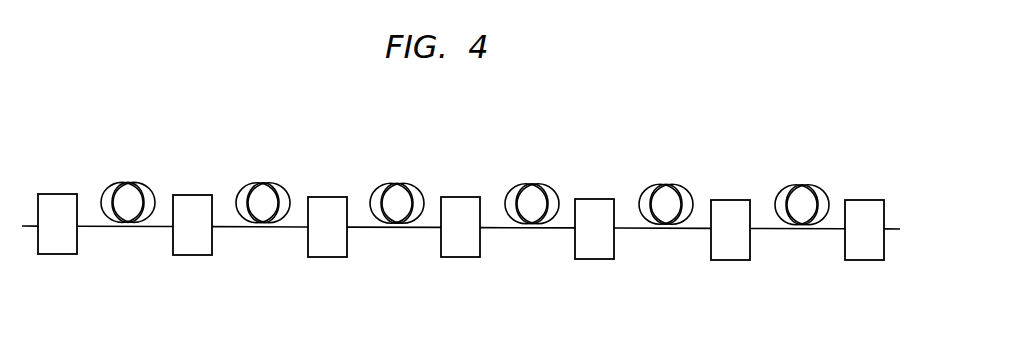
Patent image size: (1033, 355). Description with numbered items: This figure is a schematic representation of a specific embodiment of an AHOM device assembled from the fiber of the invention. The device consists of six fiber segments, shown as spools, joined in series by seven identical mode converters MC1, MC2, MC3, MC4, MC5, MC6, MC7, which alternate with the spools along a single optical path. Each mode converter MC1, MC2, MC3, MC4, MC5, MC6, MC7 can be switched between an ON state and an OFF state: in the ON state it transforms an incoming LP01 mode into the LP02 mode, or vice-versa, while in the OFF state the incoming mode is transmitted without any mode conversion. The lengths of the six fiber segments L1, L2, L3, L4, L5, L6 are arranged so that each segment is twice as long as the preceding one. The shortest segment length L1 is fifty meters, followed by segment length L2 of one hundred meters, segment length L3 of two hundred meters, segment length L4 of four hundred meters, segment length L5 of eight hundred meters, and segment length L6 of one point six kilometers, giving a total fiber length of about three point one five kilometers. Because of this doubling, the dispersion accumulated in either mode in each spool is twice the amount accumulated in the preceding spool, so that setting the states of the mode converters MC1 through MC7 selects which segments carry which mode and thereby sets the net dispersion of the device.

The mode converter MC1 is at (862, 260).
The mode converter MC2 is at (728, 260).
The mode converter MC3 is at (592, 259).
The mode converter MC4 is at (458, 257).
The mode converter MC5 is at (325, 257).
The mode converter MC6 is at (190, 255).
The mode converter MC7 is at (55, 254).
The fiber segment length L1 is at (802, 177).
The fiber segment length L2 is at (666, 176).
The fiber segment length L3 is at (532, 176).
The fiber segment length L4 is at (397, 175).
The fiber segment length L5 is at (263, 175).
The fiber segment length L6 is at (128, 174).